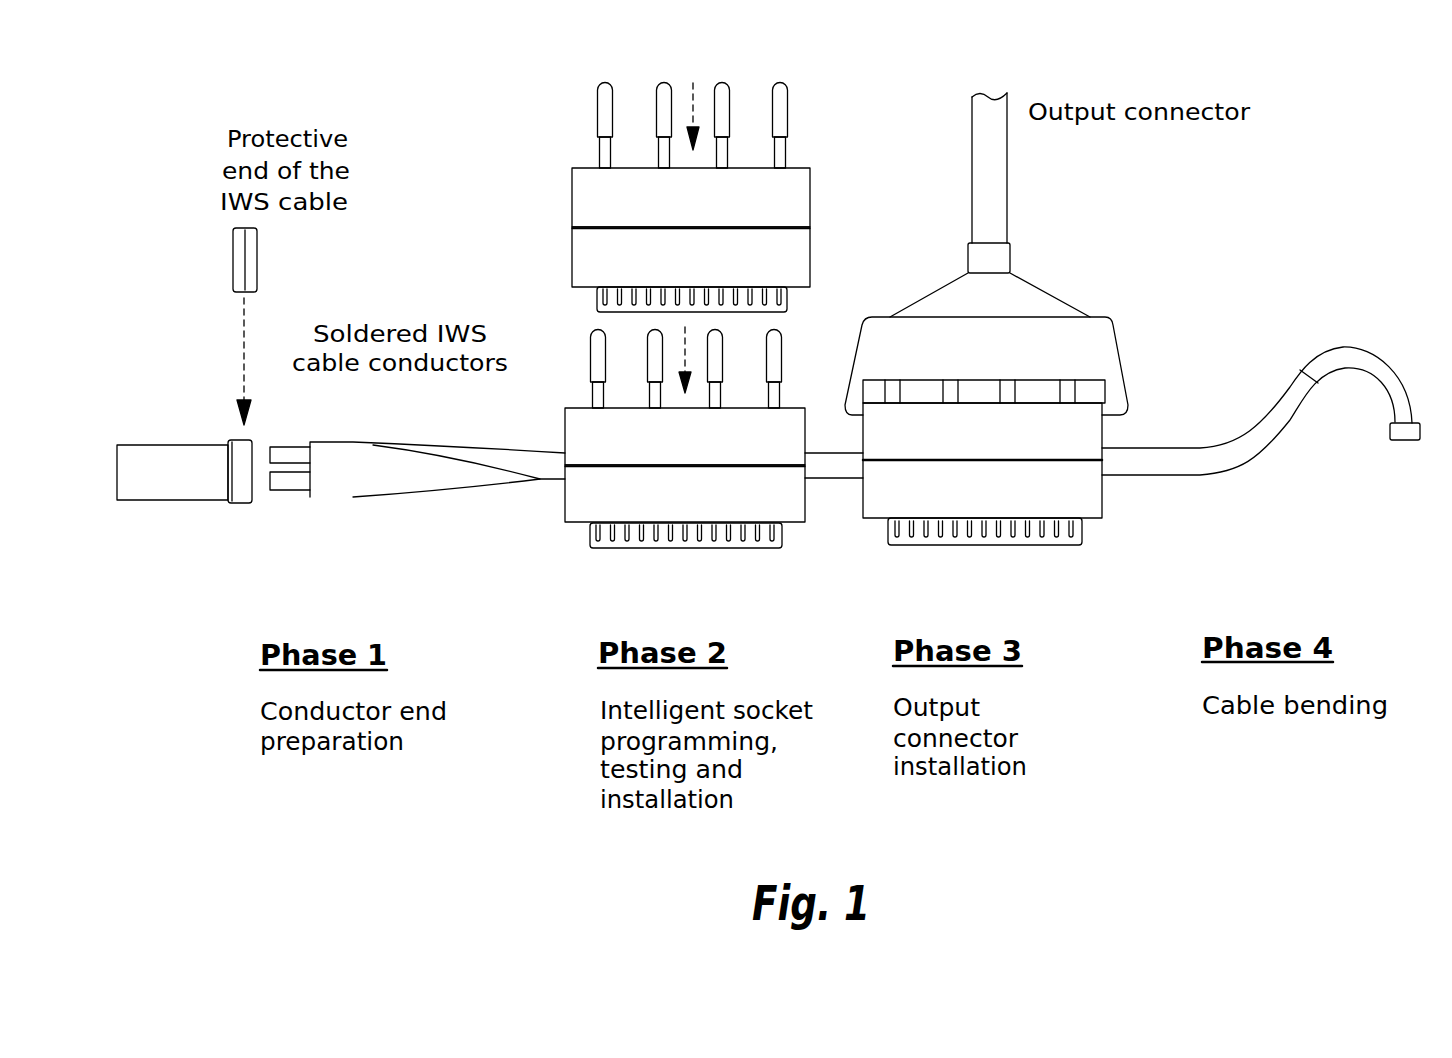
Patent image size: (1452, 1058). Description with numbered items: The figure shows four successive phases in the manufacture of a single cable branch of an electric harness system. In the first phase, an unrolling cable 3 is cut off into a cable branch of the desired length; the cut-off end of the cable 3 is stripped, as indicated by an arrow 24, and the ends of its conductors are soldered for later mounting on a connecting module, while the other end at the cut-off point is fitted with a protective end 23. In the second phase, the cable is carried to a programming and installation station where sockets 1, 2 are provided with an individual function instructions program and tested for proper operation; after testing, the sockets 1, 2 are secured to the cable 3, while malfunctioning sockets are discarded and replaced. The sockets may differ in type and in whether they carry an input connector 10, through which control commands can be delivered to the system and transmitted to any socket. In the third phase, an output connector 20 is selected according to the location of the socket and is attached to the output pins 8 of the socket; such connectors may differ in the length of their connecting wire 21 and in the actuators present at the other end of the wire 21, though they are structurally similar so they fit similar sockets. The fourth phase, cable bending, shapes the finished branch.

The socket 1 is at (795, 193).
The socket 2 is at (790, 253).
The cable 3 is at (1143, 463).
The output pins 8 is at (780, 108).
The input connector 10 is at (750, 537).
The output connector 20 is at (1117, 338).
The connecting wire 21 is at (990, 195).
The protective end 23 is at (245, 253).
The arrow 24 is at (310, 383).